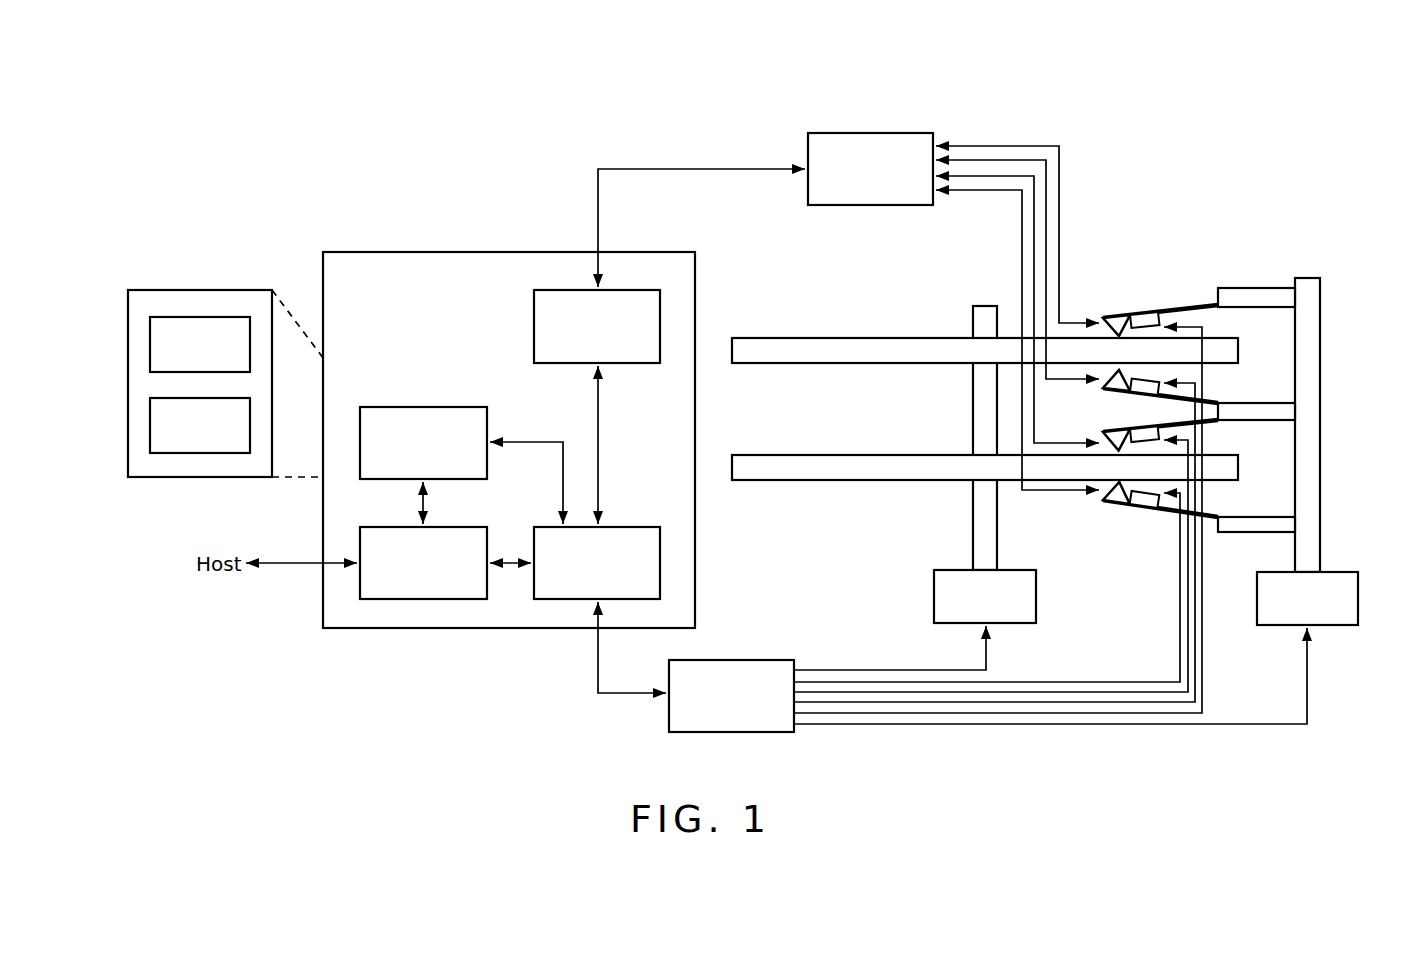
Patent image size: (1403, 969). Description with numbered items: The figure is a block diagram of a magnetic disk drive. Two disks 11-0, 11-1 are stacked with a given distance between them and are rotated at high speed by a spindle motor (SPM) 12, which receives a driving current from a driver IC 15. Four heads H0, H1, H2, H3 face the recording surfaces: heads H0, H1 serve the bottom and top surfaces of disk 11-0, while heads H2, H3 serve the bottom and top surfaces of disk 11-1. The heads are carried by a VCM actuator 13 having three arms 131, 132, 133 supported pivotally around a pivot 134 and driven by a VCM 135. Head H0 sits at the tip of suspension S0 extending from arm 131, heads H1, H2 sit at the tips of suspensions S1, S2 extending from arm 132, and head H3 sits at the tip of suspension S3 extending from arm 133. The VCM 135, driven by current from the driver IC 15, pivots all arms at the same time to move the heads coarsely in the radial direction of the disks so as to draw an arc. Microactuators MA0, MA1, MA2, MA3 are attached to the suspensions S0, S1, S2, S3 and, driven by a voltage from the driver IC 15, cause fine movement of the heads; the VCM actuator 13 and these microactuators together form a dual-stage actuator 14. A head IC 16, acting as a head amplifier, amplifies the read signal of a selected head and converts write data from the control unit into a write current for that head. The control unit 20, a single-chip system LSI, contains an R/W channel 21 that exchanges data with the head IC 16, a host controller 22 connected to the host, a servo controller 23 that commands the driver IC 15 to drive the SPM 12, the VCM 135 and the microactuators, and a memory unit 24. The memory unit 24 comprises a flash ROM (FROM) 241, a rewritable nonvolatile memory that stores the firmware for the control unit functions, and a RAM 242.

The control unit 20 is at (395, 252).
The R/W channel 21 is at (637, 364).
The host controller 22 is at (466, 527).
The servo controller 23 is at (634, 527).
The memory unit 24 is at (455, 407).
The flash ROM (FROM) 241 is at (221, 317).
The RAM 242 is at (182, 455).
The head IC 16 is at (901, 133).
The driver IC 15 is at (758, 660).
The spindle motor (SPM) 12 is at (1037, 596).
The disk 11-0 is at (805, 455).
The disk 11-1 is at (803, 338).
The VCM actuator 13 is at (1308, 465).
The arm 131 is at (1276, 517).
The arm 132 is at (1276, 403).
The arm 133 is at (1276, 287).
The pivot 134 is at (1321, 546).
The VCM 135 is at (1341, 627).
The dual-stage actuator 14 is at (1318, 252).
The head H0 is at (1109, 503).
The head H1 is at (1101, 432).
The head H2 is at (1104, 392).
The head H3 is at (1112, 317).
The microactuator MA0 is at (1144, 511).
The microactuator MA1 is at (1132, 451).
The microactuator MA2 is at (1136, 402).
The microactuator MA3 is at (1147, 304).
The suspension S0 is at (1211, 514).
The suspension S1 is at (1213, 424).
The suspension S2 is at (1211, 400).
The suspension S3 is at (1201, 304).